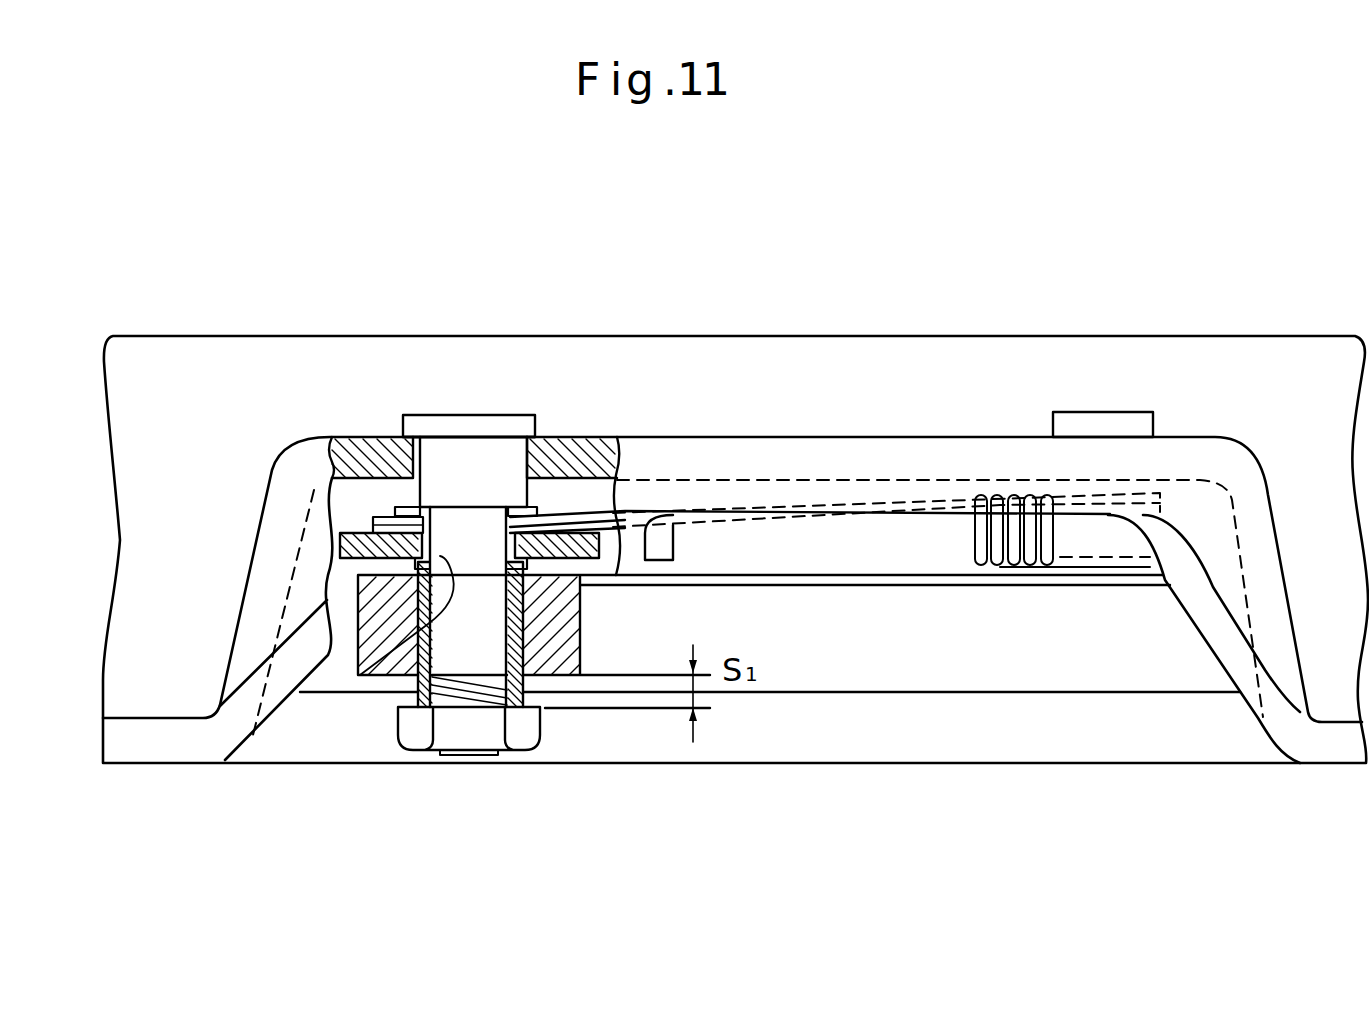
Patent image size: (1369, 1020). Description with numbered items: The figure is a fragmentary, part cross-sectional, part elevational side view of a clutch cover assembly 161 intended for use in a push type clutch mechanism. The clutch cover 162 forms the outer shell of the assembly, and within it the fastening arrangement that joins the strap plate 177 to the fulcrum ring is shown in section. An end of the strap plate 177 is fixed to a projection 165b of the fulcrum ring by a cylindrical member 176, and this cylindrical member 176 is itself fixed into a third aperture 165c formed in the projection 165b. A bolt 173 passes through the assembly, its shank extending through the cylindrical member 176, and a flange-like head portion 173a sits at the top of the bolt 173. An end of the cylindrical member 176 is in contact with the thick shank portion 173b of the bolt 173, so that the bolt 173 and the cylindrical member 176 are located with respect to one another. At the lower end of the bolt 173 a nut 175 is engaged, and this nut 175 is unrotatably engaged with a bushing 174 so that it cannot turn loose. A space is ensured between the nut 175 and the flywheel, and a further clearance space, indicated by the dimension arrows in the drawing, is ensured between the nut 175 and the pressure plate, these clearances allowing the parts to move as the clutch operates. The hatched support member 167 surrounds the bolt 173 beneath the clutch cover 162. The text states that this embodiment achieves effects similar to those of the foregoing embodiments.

The clutch cover assembly 161 is at (1240, 254).
The clutch cover 162 is at (788, 392).
The projection 165b is at (613, 487).
The third aperture 165c is at (362, 673).
The support member 167 is at (380, 390).
The bolt 173 is at (465, 404).
The bolt head flange 173a is at (500, 428).
The thick shank portion 173b is at (443, 478).
The bushing 174 is at (517, 645).
The nut 175 is at (527, 728).
The cylindrical member 176 is at (403, 547).
The strap plate 177 is at (550, 512).